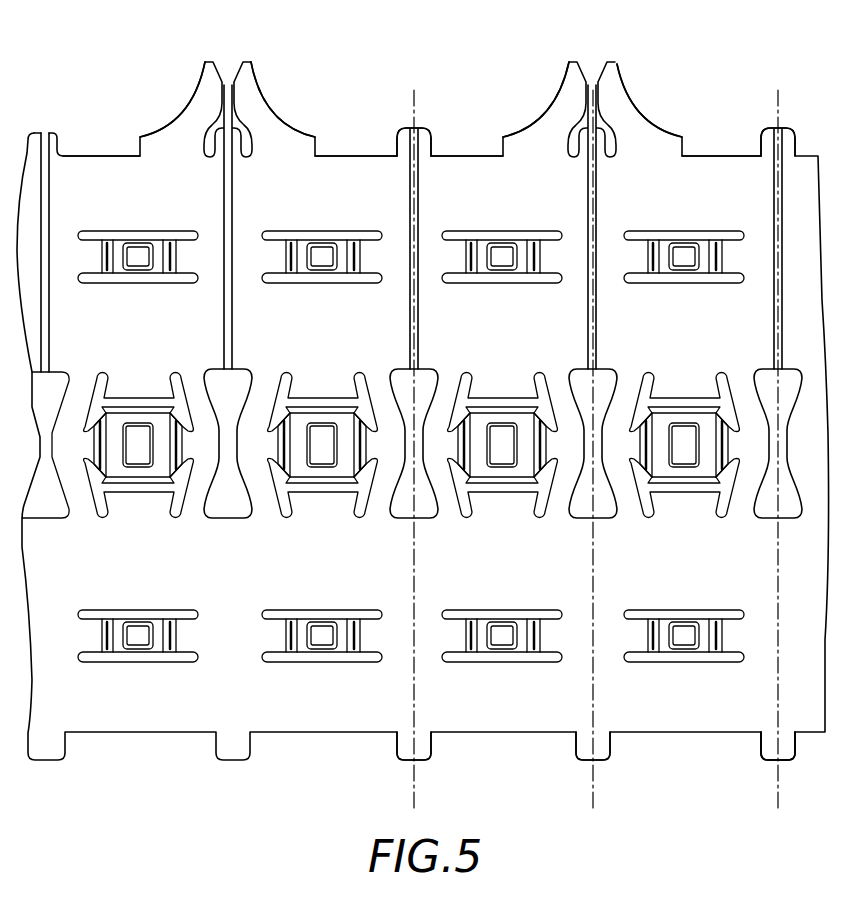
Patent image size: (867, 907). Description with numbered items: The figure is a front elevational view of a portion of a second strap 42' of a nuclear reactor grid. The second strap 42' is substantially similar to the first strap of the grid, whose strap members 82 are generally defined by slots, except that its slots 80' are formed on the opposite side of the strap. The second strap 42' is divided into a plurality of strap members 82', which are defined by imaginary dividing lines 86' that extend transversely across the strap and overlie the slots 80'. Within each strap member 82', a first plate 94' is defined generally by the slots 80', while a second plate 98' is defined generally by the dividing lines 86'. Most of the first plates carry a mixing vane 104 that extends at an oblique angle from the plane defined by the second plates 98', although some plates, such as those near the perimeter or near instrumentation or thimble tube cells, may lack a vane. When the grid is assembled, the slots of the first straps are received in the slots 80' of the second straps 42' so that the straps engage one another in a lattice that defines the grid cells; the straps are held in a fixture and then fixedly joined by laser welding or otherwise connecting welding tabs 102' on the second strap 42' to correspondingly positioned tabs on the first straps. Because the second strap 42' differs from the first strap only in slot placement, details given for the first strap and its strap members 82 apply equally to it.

The slot 80' is at (140, 191).
The strap member 82 is at (101, 112).
The mixing vane 104 is at (175, 112).
The second strap 42' is at (378, 215).
The strap member 82' is at (538, 102).
The welding tab 102' is at (792, 431).
The first plate 94' is at (595, 410).
The second plate 98' is at (593, 601).
The dividing line 86' is at (581, 765).